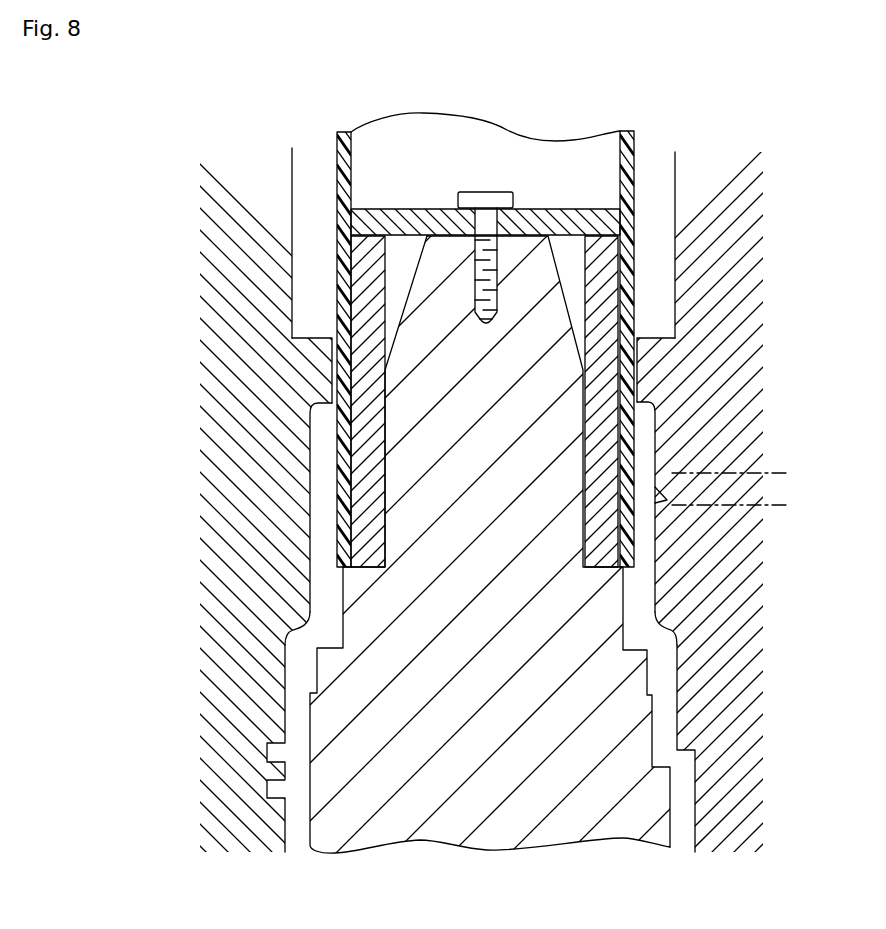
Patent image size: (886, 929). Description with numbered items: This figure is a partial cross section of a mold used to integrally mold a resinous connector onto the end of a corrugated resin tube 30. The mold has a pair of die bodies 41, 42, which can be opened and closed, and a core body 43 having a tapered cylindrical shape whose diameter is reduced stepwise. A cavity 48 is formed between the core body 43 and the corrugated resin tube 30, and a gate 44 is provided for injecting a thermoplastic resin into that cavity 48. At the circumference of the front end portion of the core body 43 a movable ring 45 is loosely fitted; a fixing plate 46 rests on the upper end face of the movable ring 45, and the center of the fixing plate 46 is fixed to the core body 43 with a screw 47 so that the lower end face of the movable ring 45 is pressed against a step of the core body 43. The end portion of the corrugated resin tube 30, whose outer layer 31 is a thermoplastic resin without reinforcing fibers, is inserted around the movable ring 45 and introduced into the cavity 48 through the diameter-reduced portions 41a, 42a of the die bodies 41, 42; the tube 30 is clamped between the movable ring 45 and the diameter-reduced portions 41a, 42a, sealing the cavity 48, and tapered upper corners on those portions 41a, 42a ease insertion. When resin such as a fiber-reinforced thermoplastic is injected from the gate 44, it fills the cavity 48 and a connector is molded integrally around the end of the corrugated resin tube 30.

The corrugated resin tube 30 is at (635, 153).
The outer layer 31 is at (336, 170).
The die body 41 is at (258, 157).
The diameter-reduced portion 41a is at (322, 365).
The die body 42 is at (720, 162).
The diameter-reduced portion 42a is at (647, 368).
The core body 43 is at (465, 803).
The gate 44 is at (763, 473).
The movable ring 45 is at (357, 289).
The fixing plate 46 is at (407, 207).
The screw 47 is at (500, 193).
The cavity 48 is at (300, 712).